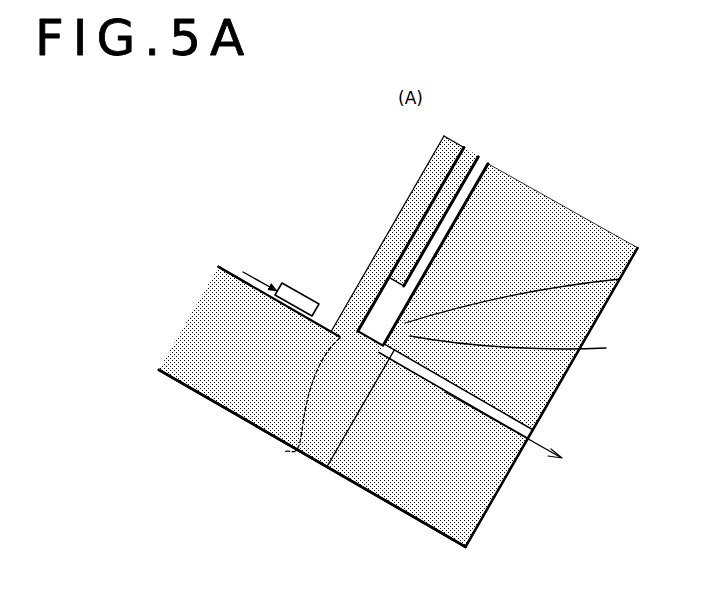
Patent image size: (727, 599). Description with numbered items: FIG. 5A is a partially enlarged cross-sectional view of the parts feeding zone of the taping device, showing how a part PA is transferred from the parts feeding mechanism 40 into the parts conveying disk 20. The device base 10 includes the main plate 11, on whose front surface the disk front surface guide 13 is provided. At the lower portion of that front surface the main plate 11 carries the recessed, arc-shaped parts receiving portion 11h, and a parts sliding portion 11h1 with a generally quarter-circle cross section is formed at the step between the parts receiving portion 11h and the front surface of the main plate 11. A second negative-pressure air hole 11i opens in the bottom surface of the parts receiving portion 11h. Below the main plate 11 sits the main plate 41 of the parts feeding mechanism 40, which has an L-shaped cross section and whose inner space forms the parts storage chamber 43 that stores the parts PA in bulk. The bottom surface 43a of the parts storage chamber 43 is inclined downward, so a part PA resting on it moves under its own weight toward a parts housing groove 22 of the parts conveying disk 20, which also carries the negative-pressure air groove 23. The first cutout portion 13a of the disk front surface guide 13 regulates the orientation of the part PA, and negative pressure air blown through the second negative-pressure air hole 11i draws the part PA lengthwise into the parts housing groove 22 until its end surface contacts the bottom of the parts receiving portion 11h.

The device base 10 is at (586, 214).
The main plate 11 is at (533, 197).
The parts receiving portion 11h is at (606, 348).
The parts sliding portion 11h1 is at (620, 279).
The second negative-pressure air hole 11i is at (524, 448).
The disk front surface guide 13 is at (436, 162).
The first cutout portion 13a is at (300, 440).
The parts conveying disk 20 is at (470, 148).
The parts housing groove 22 is at (377, 300).
The negative-pressure air groove 23 is at (440, 221).
The parts feeding mechanism 40 is at (204, 290).
The main plate 41 is at (186, 343).
The parts storage chamber 43 is at (306, 211).
The bottom surface 43a is at (238, 267).
The part PA is at (304, 279).